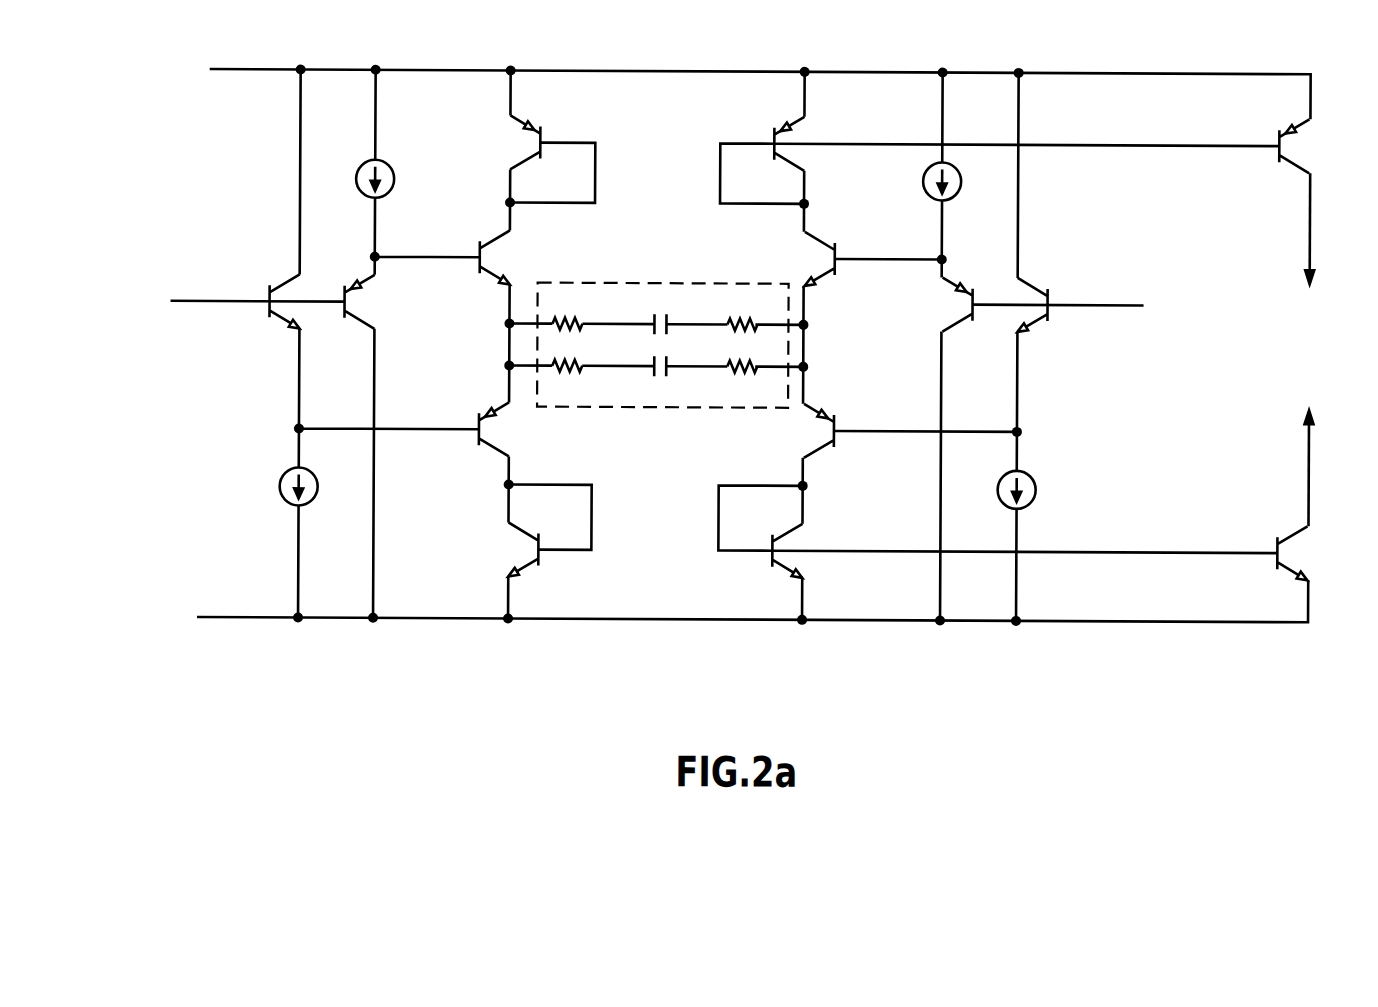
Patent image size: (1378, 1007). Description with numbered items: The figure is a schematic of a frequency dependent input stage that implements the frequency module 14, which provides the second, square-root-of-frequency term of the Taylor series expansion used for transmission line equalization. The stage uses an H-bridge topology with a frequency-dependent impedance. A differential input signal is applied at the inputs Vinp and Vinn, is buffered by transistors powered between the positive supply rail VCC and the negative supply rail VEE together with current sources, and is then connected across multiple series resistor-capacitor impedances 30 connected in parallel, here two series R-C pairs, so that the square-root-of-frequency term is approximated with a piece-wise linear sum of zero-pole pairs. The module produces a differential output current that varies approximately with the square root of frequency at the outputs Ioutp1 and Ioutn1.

The frequency module 14 is at (737, 317).
The series resistor-capacitor impedances 30 is at (669, 278).
The positive supply rail VCC is at (727, 87).
The negative supply rail VEE is at (719, 605).
The positive input Vinp is at (226, 304).
The negative input Vinn is at (1090, 308).
The positive differential output current Ioutp1 is at (1326, 243).
The negative differential output current Ioutn1 is at (1324, 452).